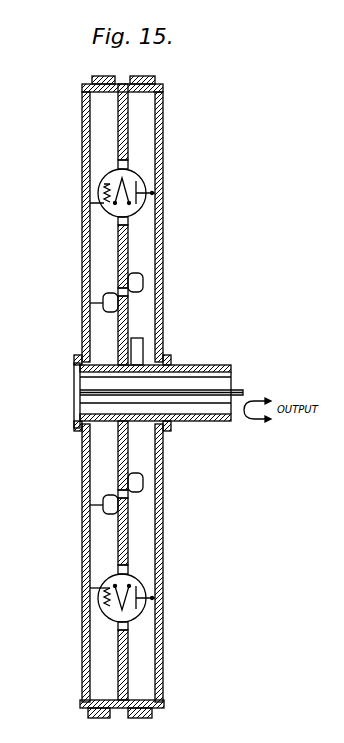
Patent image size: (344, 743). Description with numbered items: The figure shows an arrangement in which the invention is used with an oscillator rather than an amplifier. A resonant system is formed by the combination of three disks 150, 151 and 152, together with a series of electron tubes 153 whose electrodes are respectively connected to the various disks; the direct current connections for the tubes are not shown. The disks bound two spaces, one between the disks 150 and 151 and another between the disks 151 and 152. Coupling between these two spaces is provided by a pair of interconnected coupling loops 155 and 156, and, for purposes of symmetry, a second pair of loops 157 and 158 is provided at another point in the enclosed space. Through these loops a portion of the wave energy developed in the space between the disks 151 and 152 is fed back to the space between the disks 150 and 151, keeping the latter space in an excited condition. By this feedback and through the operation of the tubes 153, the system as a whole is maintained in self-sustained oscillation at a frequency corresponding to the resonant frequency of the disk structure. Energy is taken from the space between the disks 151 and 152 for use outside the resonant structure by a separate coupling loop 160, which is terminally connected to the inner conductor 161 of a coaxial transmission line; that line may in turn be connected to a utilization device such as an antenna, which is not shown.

The disk 150 is at (82, 109).
The disk 151 is at (128, 131).
The disk 152 is at (163, 166).
The electron tube 153 is at (150, 212).
The coupling loop 155 is at (90, 303).
The coupling loop 156 is at (143, 282).
The coupling loop 157 is at (90, 505).
The coupling loop 158 is at (143, 484).
The coupling loop 160 is at (143, 342).
The inner conductor 161 is at (241, 389).